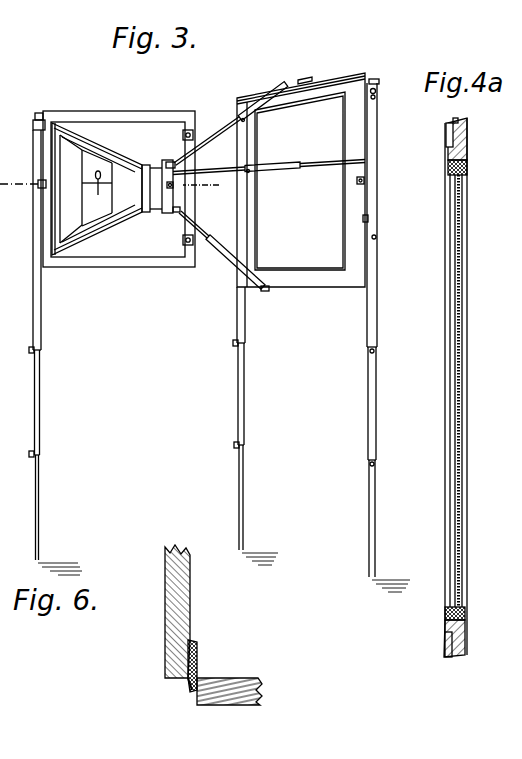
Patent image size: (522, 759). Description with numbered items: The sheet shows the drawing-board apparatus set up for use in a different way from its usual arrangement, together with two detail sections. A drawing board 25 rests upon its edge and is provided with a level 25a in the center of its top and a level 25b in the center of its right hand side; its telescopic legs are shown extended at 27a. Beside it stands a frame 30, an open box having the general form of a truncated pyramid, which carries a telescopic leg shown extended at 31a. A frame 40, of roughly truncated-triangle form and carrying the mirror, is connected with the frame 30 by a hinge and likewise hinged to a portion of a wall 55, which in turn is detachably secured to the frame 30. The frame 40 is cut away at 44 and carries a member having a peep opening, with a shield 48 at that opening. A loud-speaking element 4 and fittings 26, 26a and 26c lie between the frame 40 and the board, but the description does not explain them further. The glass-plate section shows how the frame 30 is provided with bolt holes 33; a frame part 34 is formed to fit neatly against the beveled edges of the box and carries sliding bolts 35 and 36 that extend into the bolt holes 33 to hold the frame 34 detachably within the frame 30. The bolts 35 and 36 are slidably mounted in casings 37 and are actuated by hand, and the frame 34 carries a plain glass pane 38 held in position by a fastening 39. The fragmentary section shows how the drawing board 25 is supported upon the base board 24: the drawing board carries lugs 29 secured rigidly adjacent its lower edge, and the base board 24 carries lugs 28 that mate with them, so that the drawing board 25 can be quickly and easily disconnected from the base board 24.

In FIG. 3, the loud speaker unit 4 is at (232, 192).
In FIG. 6, the base board 24 is at (235, 684).
In FIG. 3, the drawing board 25 is at (318, 88).
In FIG. 6, the drawing board 25 is at (183, 590).
In FIG. 3, the level 25a is at (305, 80).
In FIG. 3, the level 25b is at (365, 180).
In FIG. 3, the lower supporting rod 26 is at (203, 237).
In FIG. 3, the mounting plate 26a is at (174, 198).
In FIG. 3, the clip 26c is at (180, 210).
In FIG. 3, the extended telescopic leg 27a is at (244, 385).
In FIG. 6, the lugs 28 is at (192, 690).
In FIG. 6, the lugs 29 is at (197, 668).
In FIG. 3, the frame 30 is at (137, 115).
In FIG. 3, the extended telescopic leg 31a is at (35, 398).
In FIG. 4A, the bolt holes 33 is at (521, 600).
In FIG. 4A, the frame part 34 is at (467, 144).
In FIG. 4A, the sliding bolt 35 is at (457, 121).
In FIG. 4A, the sliding bolt 36 is at (452, 657).
In FIG. 4A, the casings 37 is at (450, 122).
In FIG. 4A, the plain glass pane 38 is at (462, 462).
In FIG. 4A, the fastening 39 is at (451, 170).
In FIG. 3, the frame 40 is at (72, 138).
In FIG. 3, the cut away 44 is at (83, 148).
In FIG. 3, the shield 48 is at (98, 190).
In FIG. 3, the wall 55 is at (178, 132).